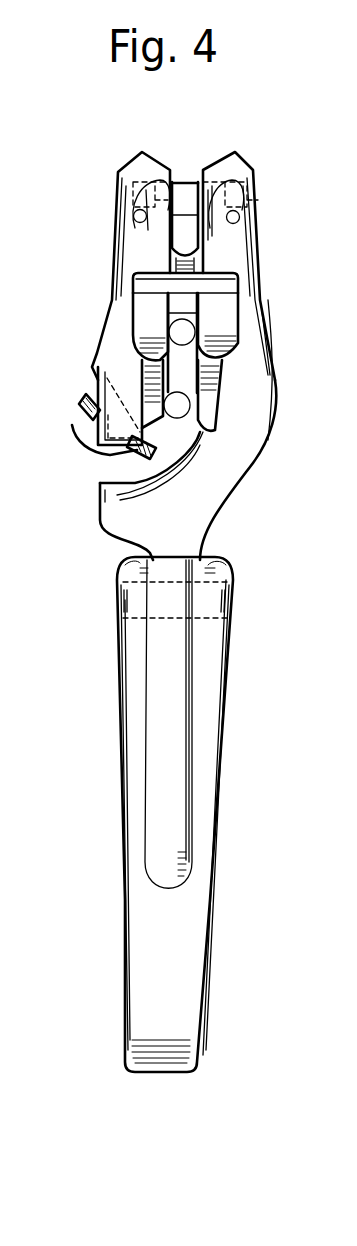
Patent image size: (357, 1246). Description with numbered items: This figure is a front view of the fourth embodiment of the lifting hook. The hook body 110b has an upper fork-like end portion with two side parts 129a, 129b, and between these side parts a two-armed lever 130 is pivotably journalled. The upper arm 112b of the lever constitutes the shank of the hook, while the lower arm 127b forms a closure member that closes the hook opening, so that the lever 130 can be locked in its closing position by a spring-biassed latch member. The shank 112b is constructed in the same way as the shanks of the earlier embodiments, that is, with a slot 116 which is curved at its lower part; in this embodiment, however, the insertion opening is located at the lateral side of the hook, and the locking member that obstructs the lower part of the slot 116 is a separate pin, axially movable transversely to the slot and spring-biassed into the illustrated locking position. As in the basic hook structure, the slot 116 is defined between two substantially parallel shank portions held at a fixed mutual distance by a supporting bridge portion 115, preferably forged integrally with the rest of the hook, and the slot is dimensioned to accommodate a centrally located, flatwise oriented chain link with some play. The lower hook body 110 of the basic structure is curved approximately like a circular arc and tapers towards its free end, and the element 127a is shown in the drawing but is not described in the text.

The lower hook body 110 is at (180, 200).
The slot 116 is at (182, 237).
The supporting bridge portion 115 is at (180, 287).
The lever 130 is at (227, 520).
The upper arm 112b is at (242, 433).
The hook-shaped locking element 127a is at (100, 448).
The hook body 110b is at (202, 755).
The lower arm 127b is at (160, 798).
The side part 129a is at (123, 593).
The side part 129b is at (217, 597).